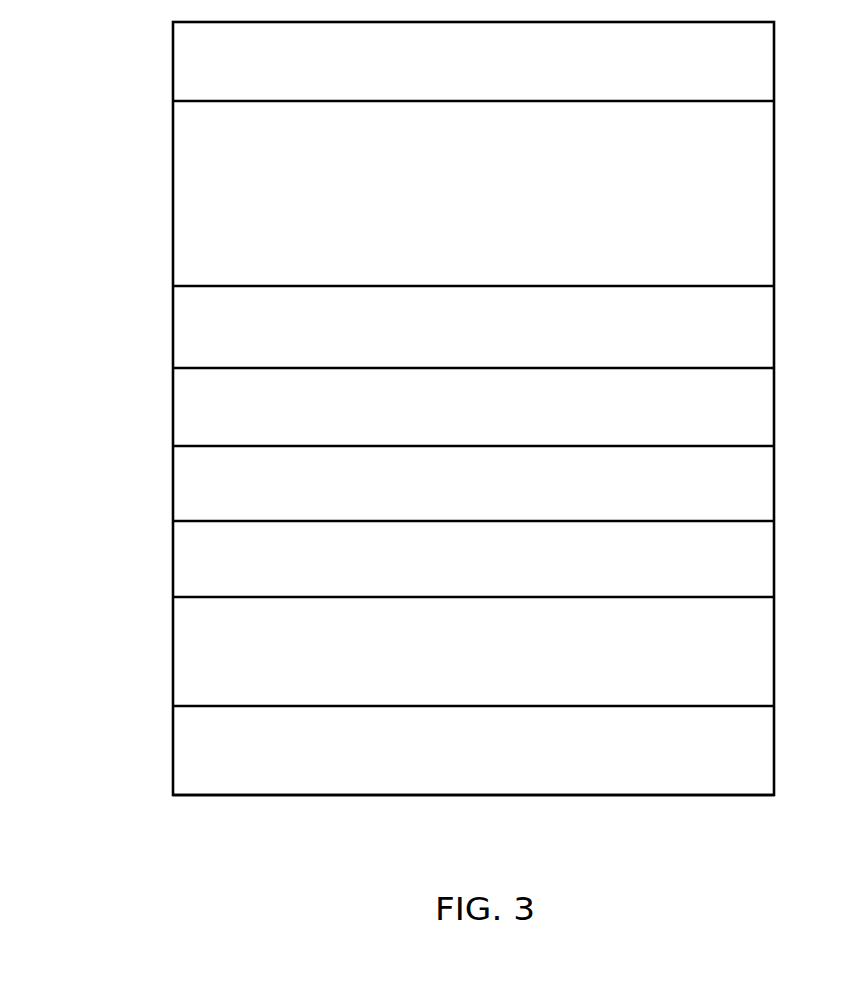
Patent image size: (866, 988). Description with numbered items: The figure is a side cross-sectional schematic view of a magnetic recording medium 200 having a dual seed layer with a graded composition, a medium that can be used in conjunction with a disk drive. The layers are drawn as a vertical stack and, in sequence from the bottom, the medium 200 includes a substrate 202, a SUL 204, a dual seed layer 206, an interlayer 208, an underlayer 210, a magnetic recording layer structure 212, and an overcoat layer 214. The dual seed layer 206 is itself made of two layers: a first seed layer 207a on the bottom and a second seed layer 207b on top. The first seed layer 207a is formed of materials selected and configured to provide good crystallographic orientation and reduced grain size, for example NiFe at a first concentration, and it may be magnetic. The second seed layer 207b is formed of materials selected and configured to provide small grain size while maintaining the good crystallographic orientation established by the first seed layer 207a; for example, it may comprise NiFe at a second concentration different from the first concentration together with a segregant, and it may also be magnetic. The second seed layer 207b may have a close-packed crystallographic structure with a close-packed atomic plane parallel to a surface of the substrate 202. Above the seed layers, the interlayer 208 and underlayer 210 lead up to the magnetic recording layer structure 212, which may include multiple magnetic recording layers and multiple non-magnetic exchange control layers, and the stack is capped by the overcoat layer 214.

The magnetic recording medium 200 is at (116, 71).
The substrate 202 is at (774, 748).
The SUL 204 is at (774, 638).
The dual seed layer 206 is at (467, 519).
The first seed layer 207a is at (173, 555).
The second seed layer 207b is at (173, 477).
The interlayer 208 is at (774, 421).
The underlayer 210 is at (774, 323).
The magnetic recording layer structure 212 is at (774, 203).
The overcoat layer 214 is at (774, 58).